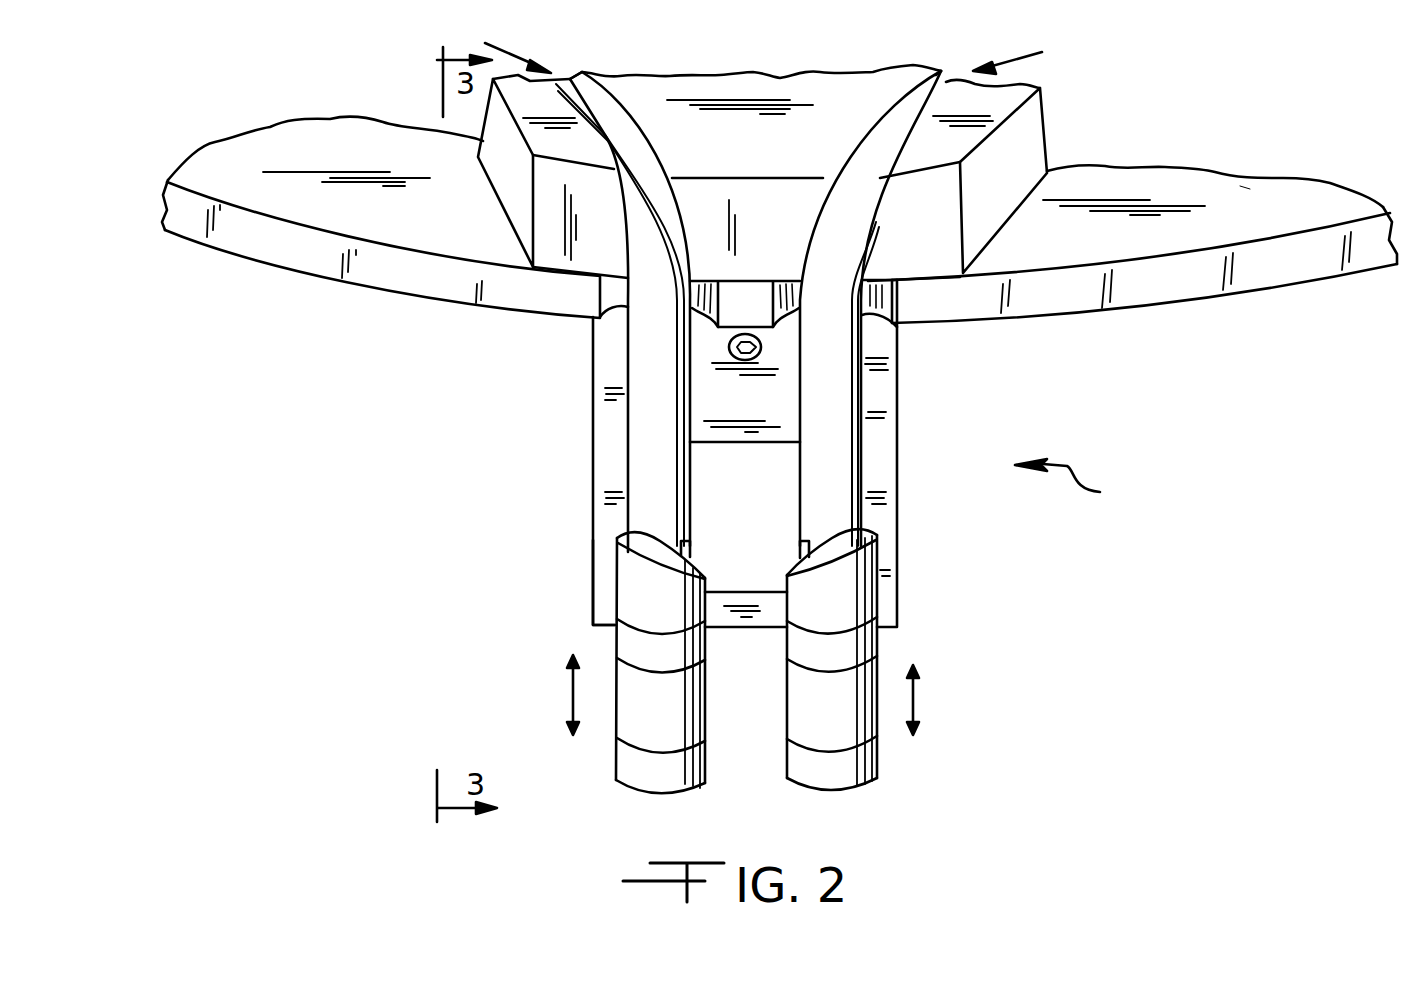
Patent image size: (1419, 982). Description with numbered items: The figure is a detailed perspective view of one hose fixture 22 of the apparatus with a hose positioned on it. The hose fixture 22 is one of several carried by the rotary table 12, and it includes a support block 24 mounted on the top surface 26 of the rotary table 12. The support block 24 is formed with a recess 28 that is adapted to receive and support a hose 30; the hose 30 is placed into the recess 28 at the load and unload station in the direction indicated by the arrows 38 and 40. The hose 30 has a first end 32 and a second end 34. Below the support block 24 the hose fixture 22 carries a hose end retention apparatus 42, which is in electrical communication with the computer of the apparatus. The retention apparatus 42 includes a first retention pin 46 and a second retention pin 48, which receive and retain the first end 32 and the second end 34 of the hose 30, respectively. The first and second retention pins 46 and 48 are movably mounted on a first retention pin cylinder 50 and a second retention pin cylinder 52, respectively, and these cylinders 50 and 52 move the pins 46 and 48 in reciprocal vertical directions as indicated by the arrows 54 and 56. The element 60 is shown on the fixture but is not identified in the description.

The rotary table 12 is at (1282, 288).
The hose fixture 22 is at (753, 70).
The support block 24 is at (1030, 133).
The top surface 26 is at (1247, 190).
The recess 28 is at (603, 103).
The hose 30 is at (643, 350).
The first end 32 is at (633, 528).
The second end 34 is at (897, 523).
The arrow 38 is at (505, 50).
The arrow 40 is at (1040, 46).
The hose end retention apparatus 42 is at (1082, 485).
The first retention pin 46 is at (700, 540).
The second retention pin 48 is at (806, 546).
The first retention pin cylinder 50 is at (621, 610).
The second retention pin cylinder 52 is at (880, 600).
The arrow 54 is at (573, 690).
The arrow 56 is at (913, 703).
The support plate 60 is at (594, 404).